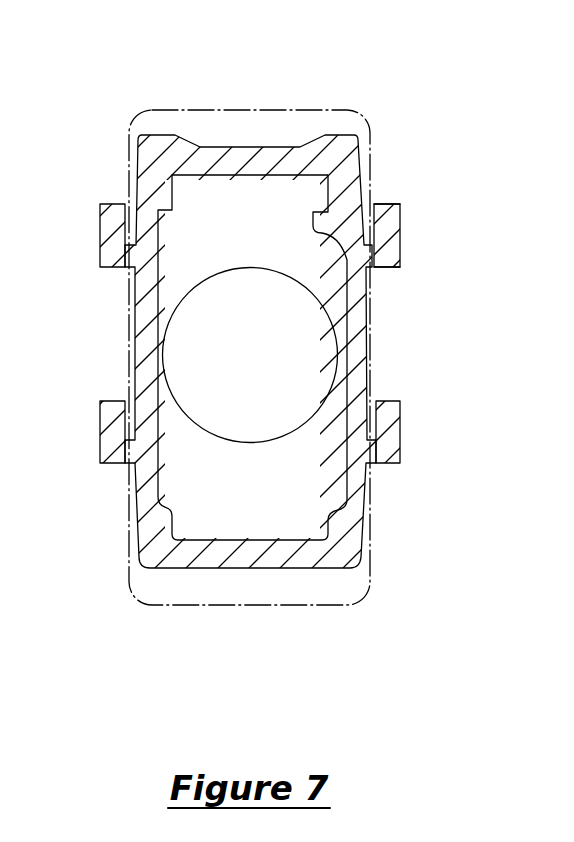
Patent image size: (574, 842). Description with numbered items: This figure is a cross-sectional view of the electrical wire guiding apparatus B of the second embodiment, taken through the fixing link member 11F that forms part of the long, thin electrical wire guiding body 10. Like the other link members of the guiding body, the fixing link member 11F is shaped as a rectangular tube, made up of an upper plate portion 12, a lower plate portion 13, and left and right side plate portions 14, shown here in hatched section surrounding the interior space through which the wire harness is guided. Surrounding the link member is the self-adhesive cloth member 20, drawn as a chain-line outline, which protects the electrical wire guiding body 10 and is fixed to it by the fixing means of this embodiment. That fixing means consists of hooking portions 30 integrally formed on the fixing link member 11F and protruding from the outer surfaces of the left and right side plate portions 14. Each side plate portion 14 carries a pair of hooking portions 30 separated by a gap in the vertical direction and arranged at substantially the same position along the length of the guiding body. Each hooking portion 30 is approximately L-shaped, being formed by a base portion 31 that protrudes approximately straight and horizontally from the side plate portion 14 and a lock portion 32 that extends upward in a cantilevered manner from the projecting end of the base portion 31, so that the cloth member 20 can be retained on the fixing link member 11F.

The electrical wire guiding body 10 is at (136, 102).
The fixing link member 11F is at (305, 128).
The upper plate portion 12 is at (242, 158).
The lower plate portion 13 is at (243, 555).
The side plate portion 14 is at (143, 330).
The self-adhesive cloth member 20 is at (358, 598).
The hooking portion 30 is at (107, 246).
The base portion 31 is at (395, 263).
The lock portion 32 is at (395, 214).
The electrical wire guiding apparatus B is at (409, 72).